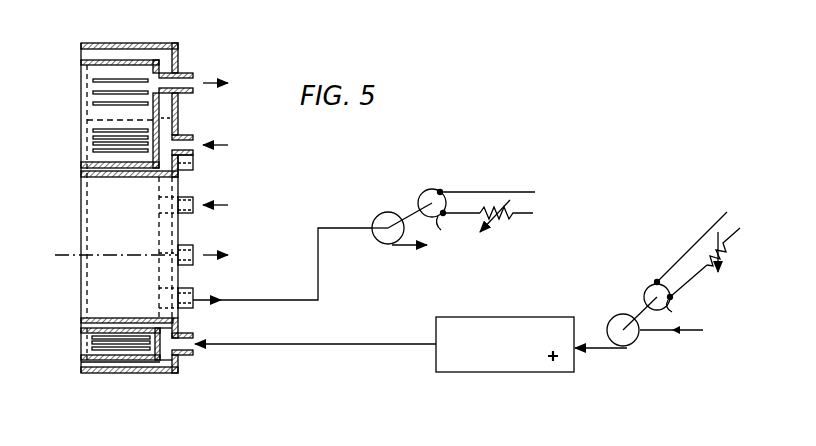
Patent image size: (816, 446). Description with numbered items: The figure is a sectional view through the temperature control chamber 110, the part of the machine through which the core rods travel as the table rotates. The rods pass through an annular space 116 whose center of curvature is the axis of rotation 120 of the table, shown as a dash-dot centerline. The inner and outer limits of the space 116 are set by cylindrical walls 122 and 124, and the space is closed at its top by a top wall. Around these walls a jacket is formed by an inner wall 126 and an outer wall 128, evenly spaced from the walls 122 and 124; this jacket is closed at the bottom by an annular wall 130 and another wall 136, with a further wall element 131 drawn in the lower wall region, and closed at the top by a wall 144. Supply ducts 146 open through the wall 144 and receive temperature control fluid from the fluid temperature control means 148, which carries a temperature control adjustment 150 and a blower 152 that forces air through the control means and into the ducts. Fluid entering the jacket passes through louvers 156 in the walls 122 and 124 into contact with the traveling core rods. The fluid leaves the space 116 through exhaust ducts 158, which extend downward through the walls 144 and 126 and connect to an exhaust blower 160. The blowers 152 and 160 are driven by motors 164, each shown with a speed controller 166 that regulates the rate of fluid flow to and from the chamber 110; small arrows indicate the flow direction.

The temperature control chamber 110 is at (187, 112).
The space 116 is at (82, 345).
The axis of rotation 120 is at (130, 255).
The cylindrical wall 122 is at (130, 320).
The cylindrical wall 124 is at (110, 373).
The inner wall 126 is at (103, 320).
The outer wall 128 is at (98, 373).
The annular wall 130 is at (93, 325).
The baffle plate 131 is at (81, 362).
The wall 136 is at (160, 340).
The wall 144 is at (178, 362).
The supply ducts 146 is at (193, 137).
The fluid temperature control means 148 is at (505, 317).
The temperature control adjustment 150 is at (558, 358).
The blower 152 is at (623, 314).
The louvers 156 is at (132, 345).
The exhaust ducts 158 is at (190, 73).
The exhaust blower 160 is at (385, 212).
The motors 164 is at (435, 190).
The variable resistor speed control 166 is at (508, 217).